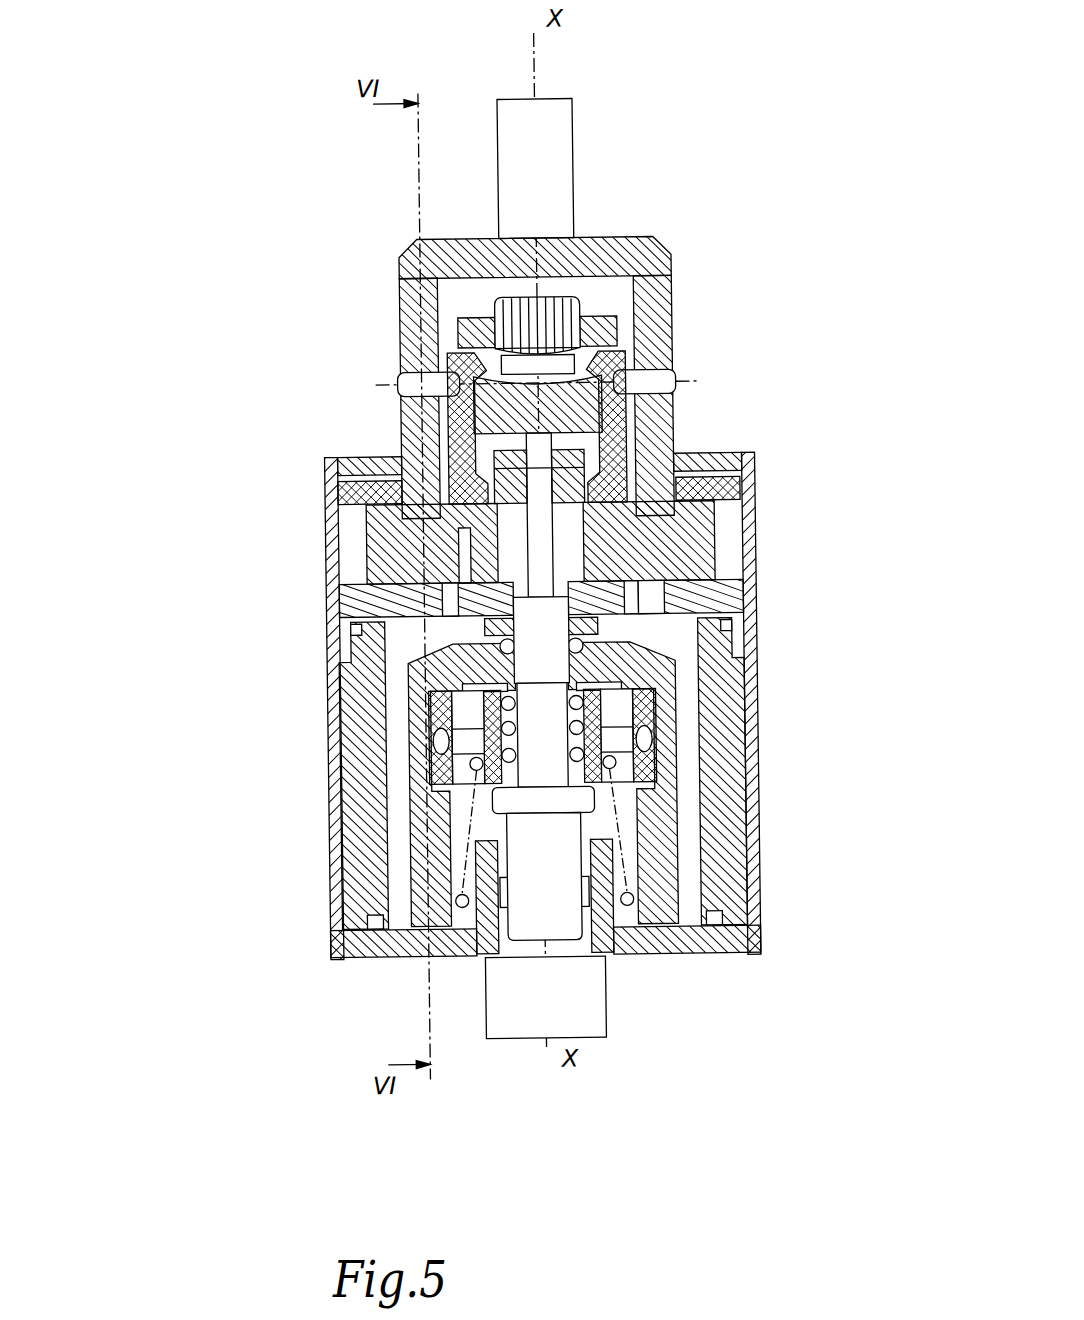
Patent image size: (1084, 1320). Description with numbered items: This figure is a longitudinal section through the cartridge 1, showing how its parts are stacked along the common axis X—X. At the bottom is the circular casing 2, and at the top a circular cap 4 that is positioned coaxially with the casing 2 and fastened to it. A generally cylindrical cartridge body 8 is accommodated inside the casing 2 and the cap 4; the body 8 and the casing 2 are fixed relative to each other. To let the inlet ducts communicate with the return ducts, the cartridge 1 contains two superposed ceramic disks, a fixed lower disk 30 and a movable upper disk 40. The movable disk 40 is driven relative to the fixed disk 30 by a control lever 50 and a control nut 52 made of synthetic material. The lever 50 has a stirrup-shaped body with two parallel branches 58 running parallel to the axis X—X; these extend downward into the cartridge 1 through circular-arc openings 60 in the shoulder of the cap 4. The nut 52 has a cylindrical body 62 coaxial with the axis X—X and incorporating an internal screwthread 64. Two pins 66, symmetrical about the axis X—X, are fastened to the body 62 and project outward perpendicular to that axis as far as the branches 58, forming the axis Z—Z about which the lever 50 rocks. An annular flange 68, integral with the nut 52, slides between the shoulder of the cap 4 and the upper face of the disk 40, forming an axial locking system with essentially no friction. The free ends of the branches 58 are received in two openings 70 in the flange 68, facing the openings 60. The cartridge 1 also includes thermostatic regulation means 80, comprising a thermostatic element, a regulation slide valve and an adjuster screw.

The cartridge 1 is at (385, 543).
The casing 2 is at (344, 956).
The cap 4 is at (318, 616).
The cartridge body 8 is at (715, 765).
The lower disk 30 is at (737, 605).
The upper disk 40 is at (693, 524).
The control lever 50 is at (574, 143).
The control nut 52 is at (640, 421).
The branches 58 is at (653, 306).
The openings 60 is at (666, 458).
The cylindrical body 62 is at (638, 450).
The internal screwthread 64 is at (443, 416).
The pins 66 is at (648, 379).
The annular flange 68 is at (333, 485).
The openings 70 is at (703, 484).
The thermostatic regulation means 80 is at (474, 813).